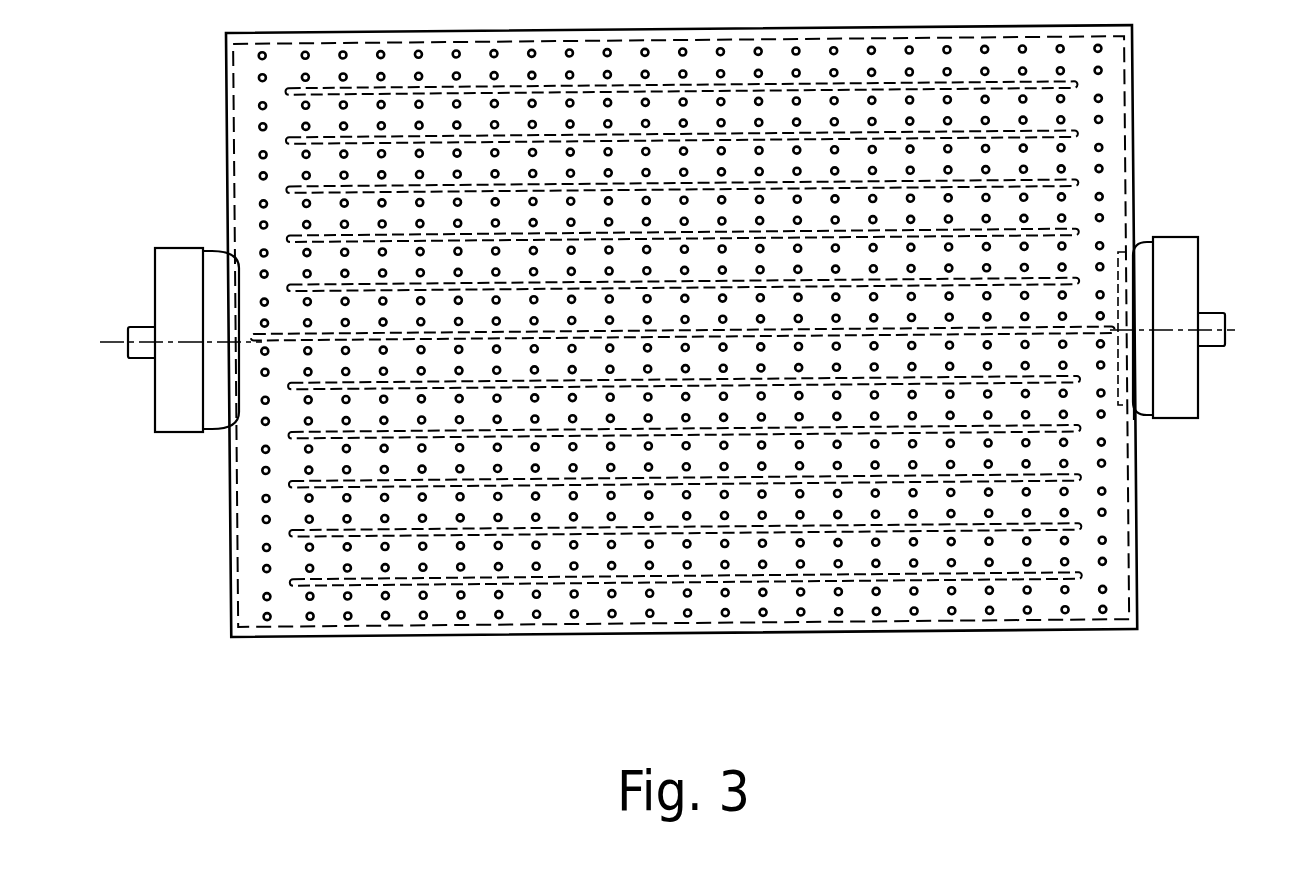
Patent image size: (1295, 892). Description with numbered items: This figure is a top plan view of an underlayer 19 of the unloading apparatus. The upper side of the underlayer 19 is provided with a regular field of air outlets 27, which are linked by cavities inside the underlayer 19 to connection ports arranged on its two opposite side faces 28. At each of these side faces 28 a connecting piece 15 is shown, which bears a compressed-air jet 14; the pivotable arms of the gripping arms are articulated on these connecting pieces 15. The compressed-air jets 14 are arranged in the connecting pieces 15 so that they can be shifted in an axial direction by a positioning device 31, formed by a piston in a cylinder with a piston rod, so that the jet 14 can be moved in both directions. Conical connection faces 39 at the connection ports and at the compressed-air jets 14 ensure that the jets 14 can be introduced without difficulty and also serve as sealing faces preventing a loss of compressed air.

The compressed-air jet 14 is at (1142, 262).
The connecting piece 15 is at (185, 285).
The underlayer 19 is at (681, 331).
The air outlet 27 is at (683, 332).
The side face 28 is at (681, 331).
The positioning device 31 is at (1213, 338).
The conical connection face 39 is at (1135, 245).